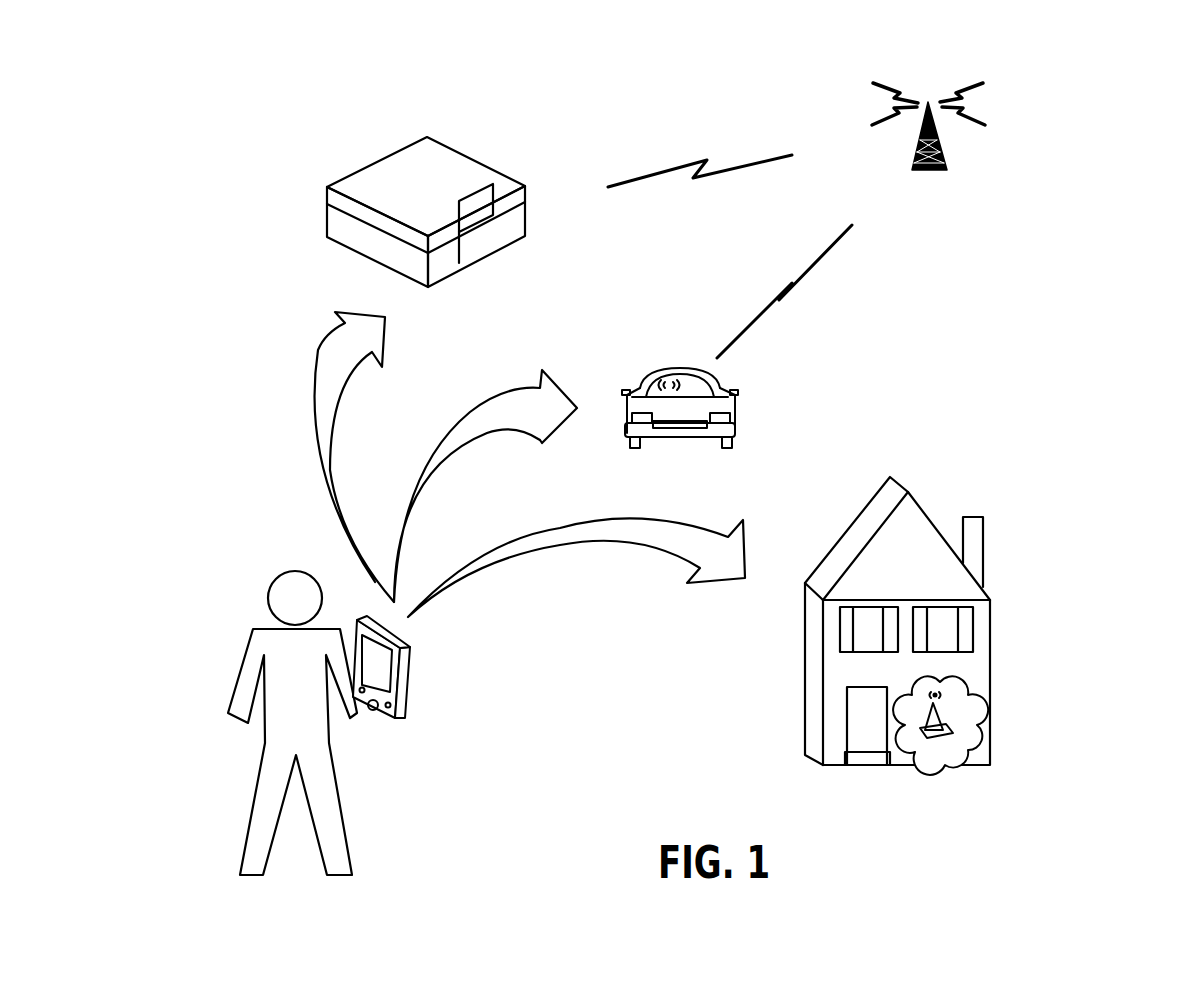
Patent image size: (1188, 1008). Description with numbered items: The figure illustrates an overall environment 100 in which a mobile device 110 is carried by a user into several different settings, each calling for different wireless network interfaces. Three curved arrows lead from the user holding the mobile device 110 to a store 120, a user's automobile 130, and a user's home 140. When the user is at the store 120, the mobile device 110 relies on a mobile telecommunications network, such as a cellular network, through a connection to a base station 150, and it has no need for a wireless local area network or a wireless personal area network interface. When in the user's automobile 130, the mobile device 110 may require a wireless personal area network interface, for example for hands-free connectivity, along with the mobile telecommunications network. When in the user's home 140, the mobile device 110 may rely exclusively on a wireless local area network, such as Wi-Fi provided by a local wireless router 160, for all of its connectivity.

The system 100 is at (225, 70).
The mobile device 110 is at (413, 662).
The store 120 is at (470, 158).
The user's automobile 130 is at (648, 375).
The user's home 140 is at (977, 511).
The base station 150 is at (930, 173).
The local wireless router 160 is at (953, 730).